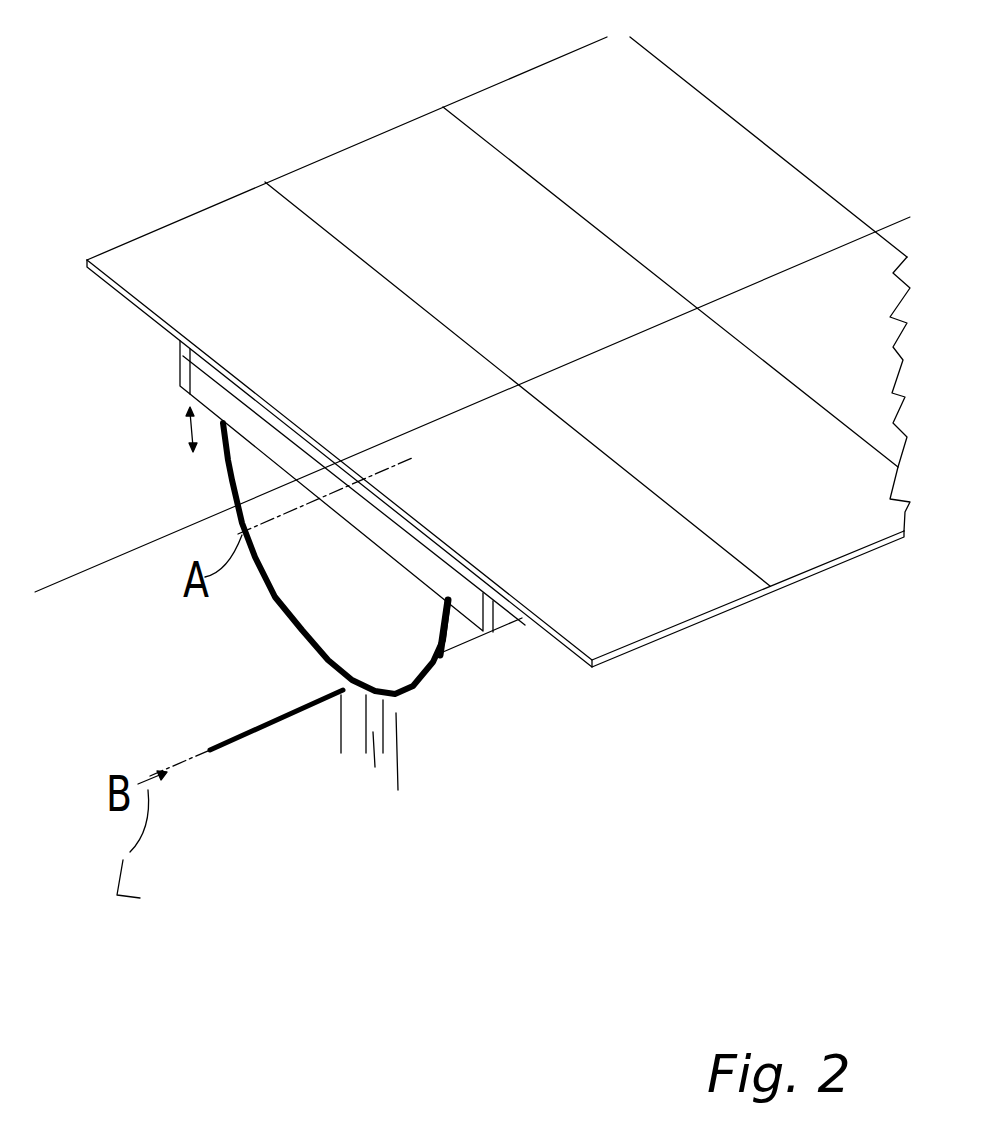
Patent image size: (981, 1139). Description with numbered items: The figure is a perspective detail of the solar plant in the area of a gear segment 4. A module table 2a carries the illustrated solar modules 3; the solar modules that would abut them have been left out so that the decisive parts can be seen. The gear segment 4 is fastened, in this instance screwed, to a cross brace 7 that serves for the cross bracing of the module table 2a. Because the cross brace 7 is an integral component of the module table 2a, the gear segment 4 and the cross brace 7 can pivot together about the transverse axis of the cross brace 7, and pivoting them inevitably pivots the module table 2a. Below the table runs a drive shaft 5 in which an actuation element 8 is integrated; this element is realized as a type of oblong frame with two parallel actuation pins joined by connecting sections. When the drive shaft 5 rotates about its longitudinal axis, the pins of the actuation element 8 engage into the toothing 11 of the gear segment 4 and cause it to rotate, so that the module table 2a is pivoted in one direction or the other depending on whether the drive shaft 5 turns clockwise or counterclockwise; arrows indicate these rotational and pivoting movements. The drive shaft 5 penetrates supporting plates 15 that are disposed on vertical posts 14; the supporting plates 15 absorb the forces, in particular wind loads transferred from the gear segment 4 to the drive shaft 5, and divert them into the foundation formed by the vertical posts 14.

The module table 2a is at (208, 208).
The solar modules 3 is at (507, 100).
The gear segment 4 is at (302, 577).
The drive shaft 5 is at (263, 737).
The cross brace 7 is at (470, 608).
The actuation element 8 is at (350, 700).
The toothing 11 is at (427, 695).
The vertical posts 14 is at (387, 705).
The supporting plates 15 is at (373, 693).